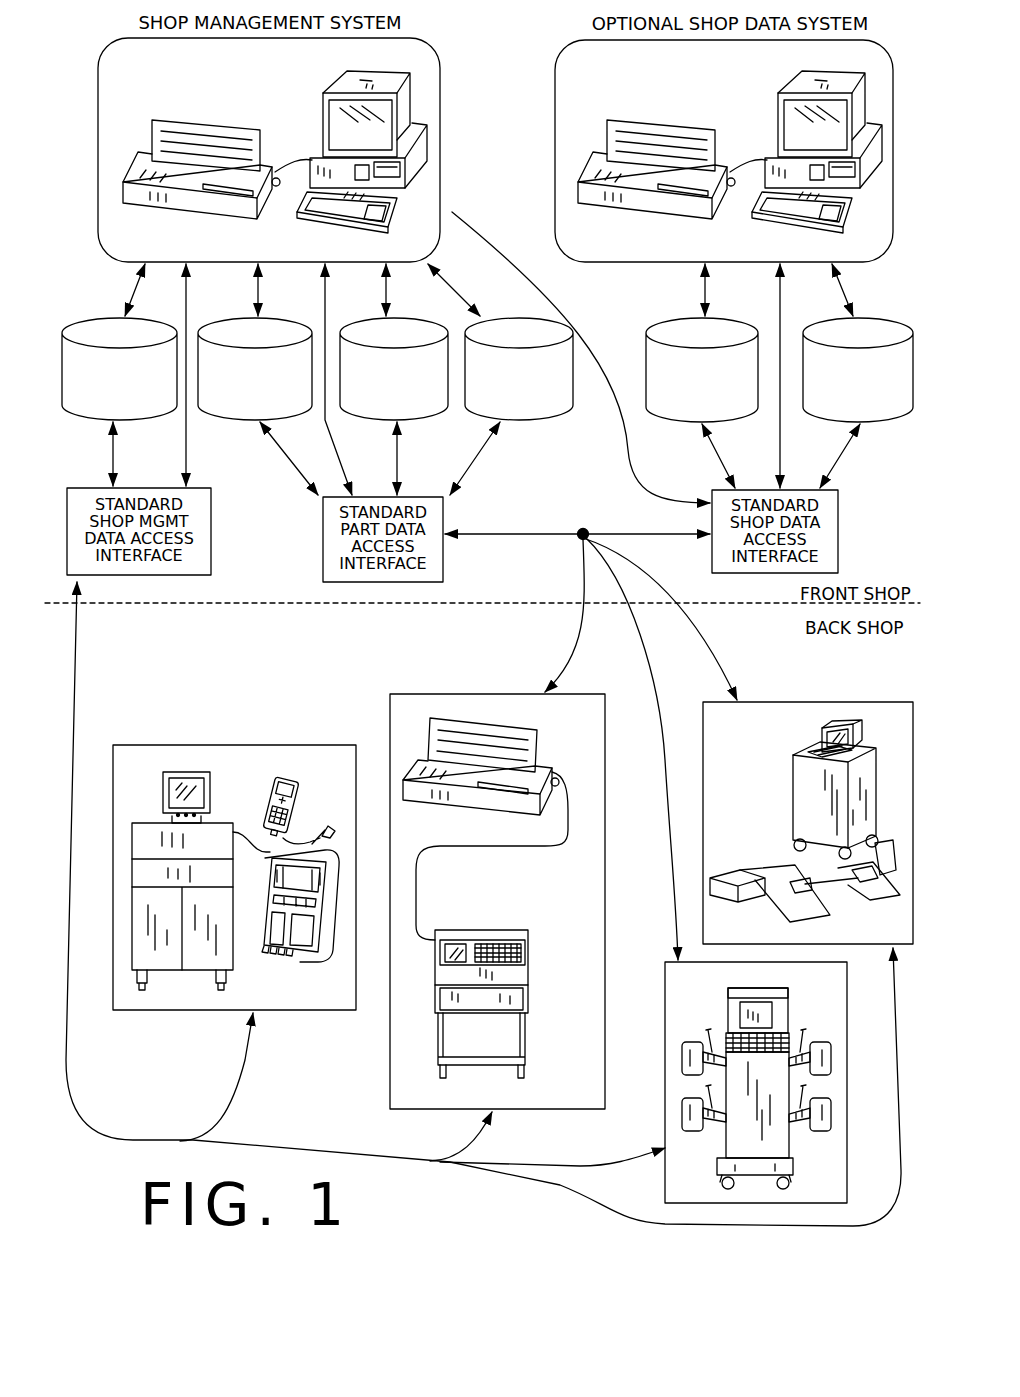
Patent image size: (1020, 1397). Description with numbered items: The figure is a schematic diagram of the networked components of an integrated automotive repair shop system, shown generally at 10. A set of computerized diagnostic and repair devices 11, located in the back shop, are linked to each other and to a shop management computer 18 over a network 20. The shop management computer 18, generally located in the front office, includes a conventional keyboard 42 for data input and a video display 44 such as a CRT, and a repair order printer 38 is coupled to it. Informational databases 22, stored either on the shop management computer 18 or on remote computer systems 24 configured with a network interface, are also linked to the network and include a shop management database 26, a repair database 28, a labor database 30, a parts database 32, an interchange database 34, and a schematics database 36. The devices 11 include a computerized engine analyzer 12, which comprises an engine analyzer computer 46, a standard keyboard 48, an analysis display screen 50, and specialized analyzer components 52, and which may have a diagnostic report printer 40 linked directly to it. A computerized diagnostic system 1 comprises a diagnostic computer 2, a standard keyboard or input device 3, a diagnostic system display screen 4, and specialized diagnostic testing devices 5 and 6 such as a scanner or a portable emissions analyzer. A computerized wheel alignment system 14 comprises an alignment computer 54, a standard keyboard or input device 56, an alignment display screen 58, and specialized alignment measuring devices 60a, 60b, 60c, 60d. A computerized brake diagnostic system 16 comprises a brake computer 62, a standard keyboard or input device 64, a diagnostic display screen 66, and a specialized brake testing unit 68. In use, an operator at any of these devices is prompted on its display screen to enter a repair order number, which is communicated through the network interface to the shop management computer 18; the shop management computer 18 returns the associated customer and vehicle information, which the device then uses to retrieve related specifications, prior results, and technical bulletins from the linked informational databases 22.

The computerized diagnostic system 1 is at (142, 775).
The diagnostic computer 2 is at (149, 838).
The standard keyboard or input device 3 is at (216, 830).
The diagnostic system display screen 4 is at (205, 790).
The specialized diagnostic testing device 5 is at (290, 789).
The specialized diagnostic testing device 6 is at (276, 916).
The integrated automotive repair shop system 10 is at (742, 618).
The computerized diagnostic and repair devices 11 is at (832, 690).
The computerized engine analyzer 12 is at (589, 864).
The computerized wheel alignment system 14 is at (844, 987).
The computerized brake diagnostic system 16 is at (902, 732).
The shop management computer 18 is at (247, 62).
The network 20 is at (73, 716).
The informational databases 22 is at (98, 296).
The remote computer systems 24 is at (714, 64).
The shop management database 26 is at (109, 343).
The repair database 28 is at (847, 343).
The labor database 30 is at (691, 343).
The parts database 32 is at (383, 343).
The interchange database 34 is at (244, 343).
The schematics database 36 is at (508, 343).
The repair order printer 38 is at (144, 166).
The diagnostic report printer 40 is at (424, 775).
The keyboard 42 is at (322, 205).
The video display 44 is at (325, 118).
The engine analyzer computer 46 is at (430, 998).
The standard keyboard 48 is at (528, 948).
The analysis display screen 50 is at (470, 930).
The specialized analyzer components 52 is at (486, 1040).
The alignment computer 54 is at (732, 1060).
The standard keyboard or input device 56 is at (768, 1035).
The alignment display screen 58 is at (752, 1010).
The specialized alignment measuring device 60a is at (822, 1052).
The specialized alignment measuring device 60b is at (819, 1128).
The specialized alignment measuring device 60c is at (690, 1048).
The specialized alignment measuring device 60d is at (690, 1128).
The brake computer 62 is at (818, 792).
The standard keyboard or input device 64 is at (804, 750).
The diagnostic display screen 66 is at (822, 734).
The specialized brake testing unit 68 is at (867, 885).